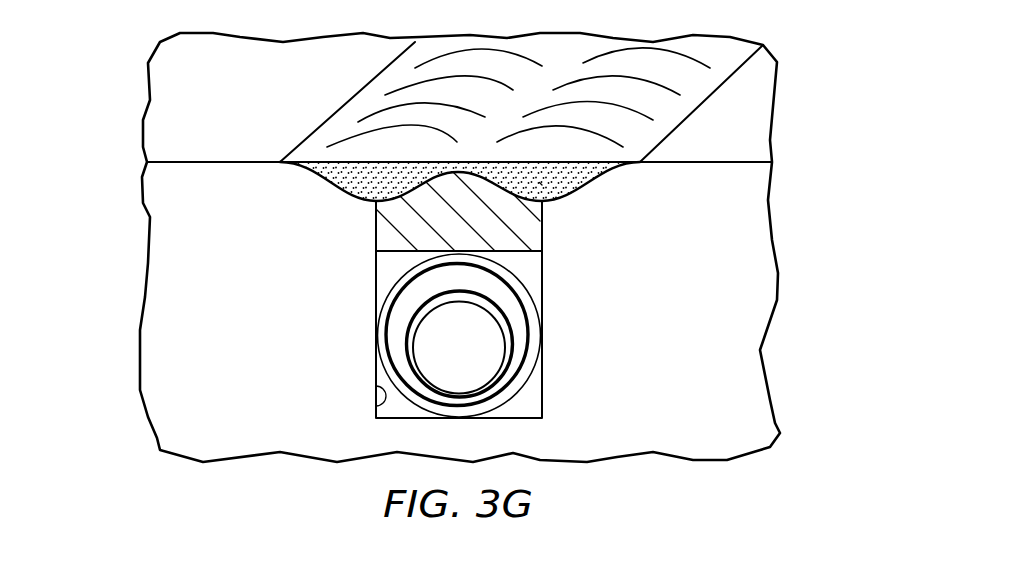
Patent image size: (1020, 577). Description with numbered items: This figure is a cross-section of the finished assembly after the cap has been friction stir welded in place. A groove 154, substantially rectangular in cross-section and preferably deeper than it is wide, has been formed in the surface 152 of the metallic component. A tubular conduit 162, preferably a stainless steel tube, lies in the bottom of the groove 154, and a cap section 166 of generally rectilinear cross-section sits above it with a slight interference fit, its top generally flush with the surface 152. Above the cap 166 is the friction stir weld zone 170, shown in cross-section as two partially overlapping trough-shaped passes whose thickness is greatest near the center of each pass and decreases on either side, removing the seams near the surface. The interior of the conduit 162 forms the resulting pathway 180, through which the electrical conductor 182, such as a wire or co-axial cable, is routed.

The surface 152 is at (172, 83).
The friction stir weld zone 170 is at (372, 87).
The cap section 166 is at (527, 230).
The tubular conduit 162 is at (395, 280).
The pathway 180 is at (497, 298).
The electrical conductor 182 is at (513, 353).
The groove 154 is at (376, 405).